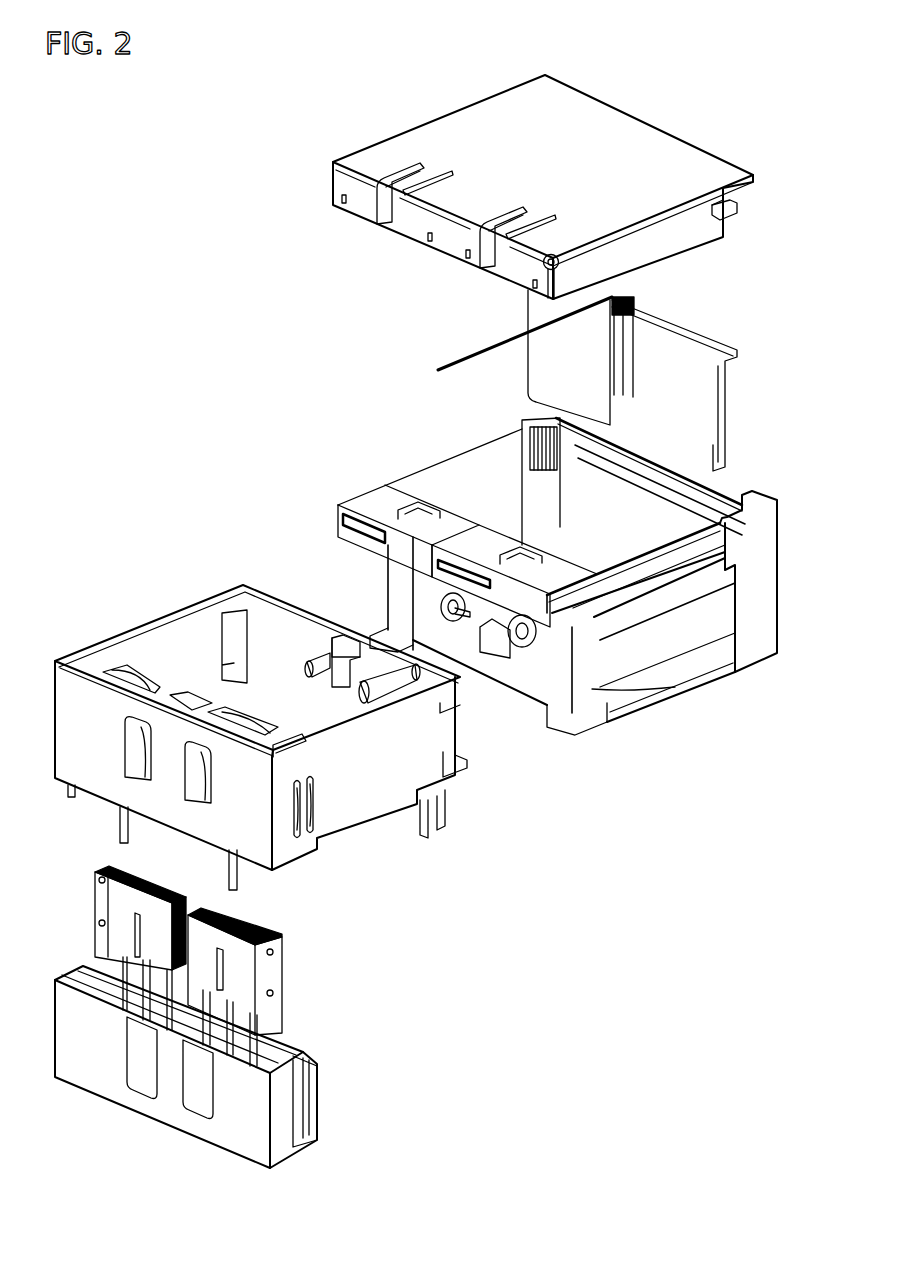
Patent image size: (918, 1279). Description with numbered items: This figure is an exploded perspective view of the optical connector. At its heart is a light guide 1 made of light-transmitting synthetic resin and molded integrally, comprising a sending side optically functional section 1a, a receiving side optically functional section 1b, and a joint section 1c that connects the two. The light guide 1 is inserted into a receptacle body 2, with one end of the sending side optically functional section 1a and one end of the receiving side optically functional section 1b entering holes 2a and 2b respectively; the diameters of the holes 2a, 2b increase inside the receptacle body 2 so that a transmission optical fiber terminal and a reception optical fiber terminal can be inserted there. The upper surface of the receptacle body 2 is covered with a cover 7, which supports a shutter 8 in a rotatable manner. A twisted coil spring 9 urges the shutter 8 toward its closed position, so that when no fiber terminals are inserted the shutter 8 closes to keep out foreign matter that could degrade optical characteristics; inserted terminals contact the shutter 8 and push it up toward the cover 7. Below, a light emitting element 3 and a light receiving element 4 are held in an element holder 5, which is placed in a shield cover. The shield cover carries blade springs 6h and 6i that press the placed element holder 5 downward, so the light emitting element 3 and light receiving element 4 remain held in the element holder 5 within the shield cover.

The light guide 1 is at (393, 708).
The sending side optically functional section 1a is at (393, 687).
The receiving side optically functional section 1b is at (323, 653).
The joint section 1c is at (332, 680).
The receptacle body 2 is at (574, 594).
The hole 2a is at (497, 650).
The hole 2b is at (437, 612).
The light emitting element 3 is at (245, 972).
The light receiving element 4 is at (117, 908).
The element holder 5 is at (240, 1127).
The blade spring 6h is at (207, 780).
The blade spring 6i is at (125, 750).
The cover 7 is at (625, 131).
The shutter 8 is at (708, 398).
The twisted coil spring 9 is at (463, 352).